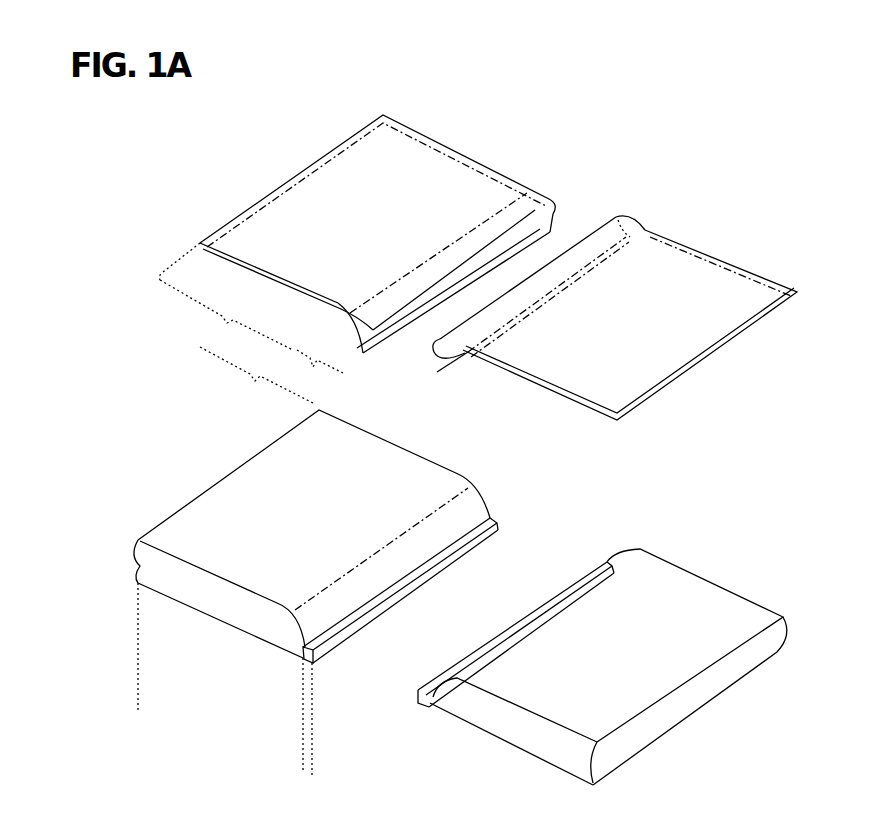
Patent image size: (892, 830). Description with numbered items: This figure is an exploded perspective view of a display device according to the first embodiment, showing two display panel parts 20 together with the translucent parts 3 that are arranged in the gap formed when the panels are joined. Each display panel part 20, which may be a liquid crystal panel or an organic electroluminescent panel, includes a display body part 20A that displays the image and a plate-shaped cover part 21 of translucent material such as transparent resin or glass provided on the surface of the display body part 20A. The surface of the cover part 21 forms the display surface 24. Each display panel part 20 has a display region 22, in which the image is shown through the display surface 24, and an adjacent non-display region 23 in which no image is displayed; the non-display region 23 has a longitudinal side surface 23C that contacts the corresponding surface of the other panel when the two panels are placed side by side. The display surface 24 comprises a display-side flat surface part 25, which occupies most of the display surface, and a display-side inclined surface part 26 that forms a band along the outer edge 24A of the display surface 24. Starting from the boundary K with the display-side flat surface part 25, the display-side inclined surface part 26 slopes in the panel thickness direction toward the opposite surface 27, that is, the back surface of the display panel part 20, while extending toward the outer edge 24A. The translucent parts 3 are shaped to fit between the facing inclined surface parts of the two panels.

The translucent part 3 is at (443, 279).
The cover part 21 is at (379, 229).
The display panel part 20 is at (460, 595).
The display body part 20A is at (322, 518).
The display region 22 is at (300, 760).
The non-display region 23 is at (337, 782).
The longitudinal side surface 23C is at (376, 614).
The display surface 24 is at (256, 377).
The outer edge 24A is at (328, 626).
The display-side flat surface part 25 is at (226, 298).
The display-side inclined surface part 26 is at (320, 373).
The opposite surface 27 is at (198, 616).
The boundary K is at (343, 318).